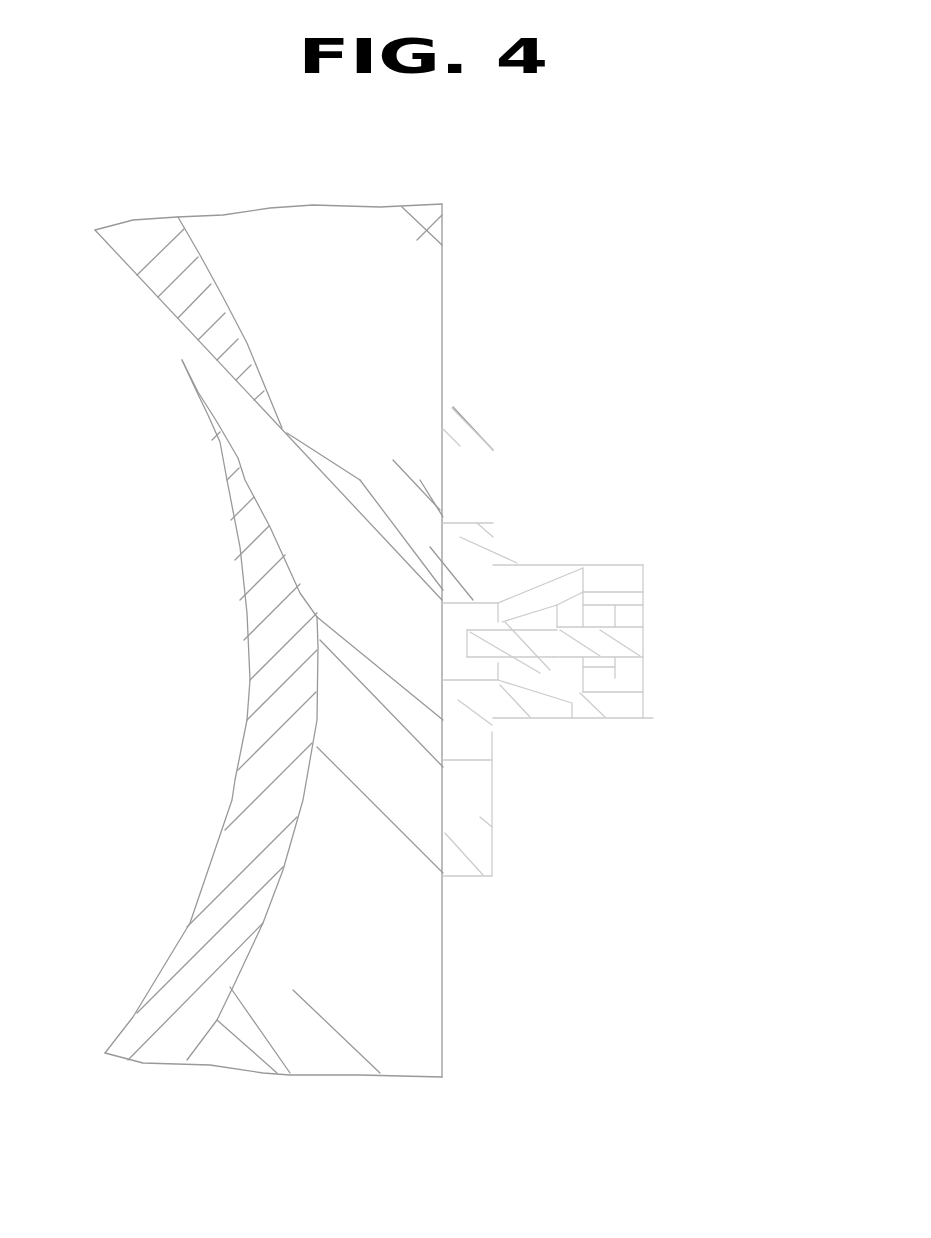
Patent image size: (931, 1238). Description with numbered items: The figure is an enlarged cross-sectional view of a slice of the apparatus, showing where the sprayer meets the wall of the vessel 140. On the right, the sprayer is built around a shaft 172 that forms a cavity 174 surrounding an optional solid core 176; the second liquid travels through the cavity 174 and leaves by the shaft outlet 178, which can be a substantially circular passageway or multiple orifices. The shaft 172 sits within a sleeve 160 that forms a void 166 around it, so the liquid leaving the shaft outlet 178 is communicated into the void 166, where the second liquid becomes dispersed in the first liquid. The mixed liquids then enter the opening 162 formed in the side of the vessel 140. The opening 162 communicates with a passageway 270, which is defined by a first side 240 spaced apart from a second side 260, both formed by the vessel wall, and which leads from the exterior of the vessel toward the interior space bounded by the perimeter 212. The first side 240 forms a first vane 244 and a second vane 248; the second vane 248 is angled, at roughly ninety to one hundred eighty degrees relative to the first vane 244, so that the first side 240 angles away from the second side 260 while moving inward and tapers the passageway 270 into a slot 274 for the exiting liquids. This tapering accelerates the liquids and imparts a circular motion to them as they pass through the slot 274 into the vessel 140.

The vessel 140 is at (339, 627).
The sleeve 160 is at (612, 668).
The opening 162 is at (527, 485).
The void 166 is at (658, 586).
The shaft 172 is at (650, 703).
The cavity 174 is at (596, 549).
The solid core 176 is at (650, 637).
The shaft outlet 178 is at (532, 697).
The perimeter 212 is at (177, 706).
The first side 240 is at (223, 836).
The first vane 244 is at (330, 837).
The second vane 248 is at (267, 533).
The second side 260 is at (213, 348).
The passageway 270 is at (357, 554).
The slot 274 is at (181, 481).